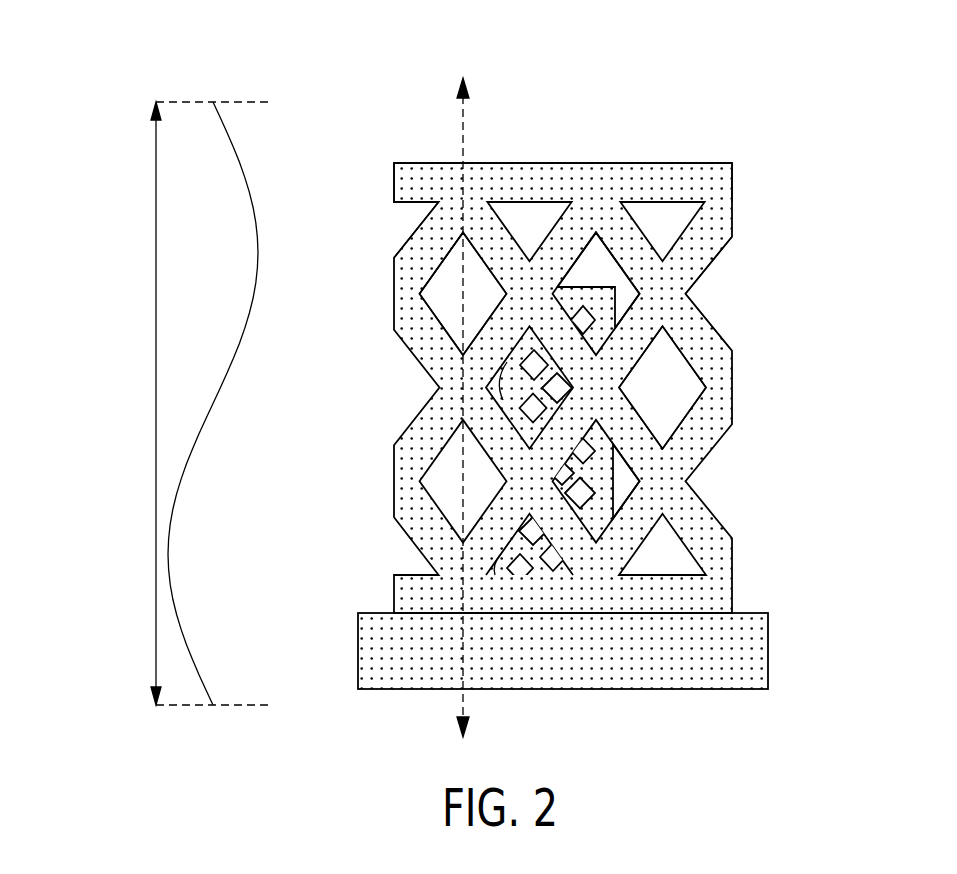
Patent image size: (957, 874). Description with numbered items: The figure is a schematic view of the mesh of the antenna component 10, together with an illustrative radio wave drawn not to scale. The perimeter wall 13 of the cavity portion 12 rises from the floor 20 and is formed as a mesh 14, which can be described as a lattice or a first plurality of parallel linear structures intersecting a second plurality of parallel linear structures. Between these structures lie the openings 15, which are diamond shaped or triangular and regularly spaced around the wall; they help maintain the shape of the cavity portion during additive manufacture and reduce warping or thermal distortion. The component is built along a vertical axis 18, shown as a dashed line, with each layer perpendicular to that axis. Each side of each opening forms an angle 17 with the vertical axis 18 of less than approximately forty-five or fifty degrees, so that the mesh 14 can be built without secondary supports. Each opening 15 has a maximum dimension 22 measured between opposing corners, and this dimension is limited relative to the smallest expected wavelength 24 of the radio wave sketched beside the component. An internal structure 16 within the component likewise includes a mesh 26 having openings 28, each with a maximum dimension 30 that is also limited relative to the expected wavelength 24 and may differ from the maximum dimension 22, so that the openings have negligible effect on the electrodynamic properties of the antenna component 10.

The antenna component 10 is at (577, 358).
The cavity portion 12 is at (590, 334).
The perimeter wall 13 is at (683, 180).
The mesh 14 is at (695, 262).
The openings 15 is at (438, 288).
The internal structure 16 is at (595, 284).
The angle 17 is at (463, 266).
The vertical axis 18 is at (465, 128).
The floor 20 is at (762, 672).
The maximum dimension 22 is at (660, 328).
The smallest expected wavelength 24 is at (153, 170).
The mesh 26 is at (537, 400).
The openings 28 is at (535, 357).
The maximum dimension 30 is at (583, 477).